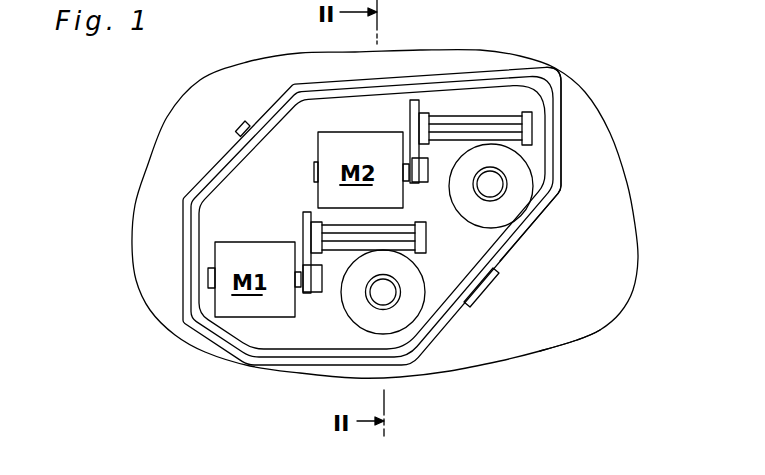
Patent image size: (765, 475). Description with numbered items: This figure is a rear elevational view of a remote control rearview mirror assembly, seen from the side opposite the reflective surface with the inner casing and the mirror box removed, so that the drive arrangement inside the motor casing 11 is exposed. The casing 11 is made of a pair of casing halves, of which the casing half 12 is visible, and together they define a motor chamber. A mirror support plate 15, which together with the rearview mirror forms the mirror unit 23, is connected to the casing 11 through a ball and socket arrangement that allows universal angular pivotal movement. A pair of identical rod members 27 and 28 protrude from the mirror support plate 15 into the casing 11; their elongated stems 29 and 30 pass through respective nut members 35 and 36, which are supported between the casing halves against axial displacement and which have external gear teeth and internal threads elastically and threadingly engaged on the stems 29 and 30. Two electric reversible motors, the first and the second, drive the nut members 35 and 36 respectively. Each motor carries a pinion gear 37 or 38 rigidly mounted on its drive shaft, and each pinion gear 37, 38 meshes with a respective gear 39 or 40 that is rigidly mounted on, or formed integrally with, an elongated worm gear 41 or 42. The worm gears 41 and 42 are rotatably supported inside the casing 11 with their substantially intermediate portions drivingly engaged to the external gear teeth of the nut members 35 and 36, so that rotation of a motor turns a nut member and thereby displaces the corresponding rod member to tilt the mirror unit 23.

The motor casing 11 is at (523, 239).
The casing half 12 is at (186, 306).
The mirror support plate 15 is at (570, 328).
The mirror unit 23 is at (178, 130).
The rod member 27 is at (388, 291).
The rod member 28 is at (487, 184).
The elongated stem 29 is at (382, 299).
The elongated stem 30 is at (493, 187).
The nut member 35 is at (420, 274).
The nut member 36 is at (520, 200).
The pinion gear 37 is at (309, 288).
The pinion gear 38 is at (427, 171).
The gear 39 is at (303, 226).
The gear 40 is at (410, 115).
The worm gear 41 is at (337, 231).
The worm gear 42 is at (502, 123).